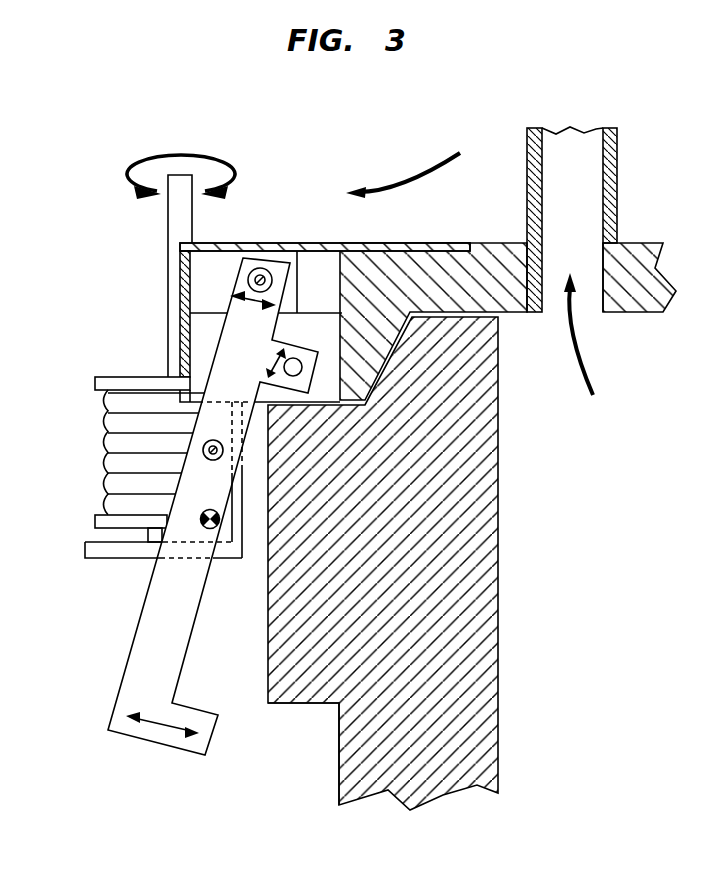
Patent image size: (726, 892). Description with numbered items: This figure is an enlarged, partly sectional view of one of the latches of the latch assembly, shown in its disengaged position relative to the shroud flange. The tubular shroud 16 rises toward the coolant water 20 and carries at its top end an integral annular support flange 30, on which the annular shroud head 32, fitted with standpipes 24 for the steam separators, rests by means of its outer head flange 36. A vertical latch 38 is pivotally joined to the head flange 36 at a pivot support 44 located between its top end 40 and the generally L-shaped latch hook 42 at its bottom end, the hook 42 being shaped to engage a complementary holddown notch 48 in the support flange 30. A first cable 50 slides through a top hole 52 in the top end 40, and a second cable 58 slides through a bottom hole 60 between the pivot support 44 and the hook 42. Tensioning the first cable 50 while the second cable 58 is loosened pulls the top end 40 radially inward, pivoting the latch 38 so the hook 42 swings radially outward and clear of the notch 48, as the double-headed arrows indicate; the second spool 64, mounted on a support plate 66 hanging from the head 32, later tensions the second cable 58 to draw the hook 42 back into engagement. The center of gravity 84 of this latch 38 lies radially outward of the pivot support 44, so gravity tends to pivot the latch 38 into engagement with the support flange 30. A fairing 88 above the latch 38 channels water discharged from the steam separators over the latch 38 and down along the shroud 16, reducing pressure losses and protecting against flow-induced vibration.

The shroud 16 is at (516, 632).
The coolant water 20 is at (400, 184).
The standpipes 24 is at (527, 165).
The support flange 30 is at (498, 403).
The shroud head 32 is at (641, 337).
The head flange 36 is at (477, 242).
The latch 38 is at (140, 624).
The top end 40 is at (238, 248).
The latch hook 42 is at (150, 742).
The pivot support 44 is at (296, 360).
The holddown notch 48 is at (302, 705).
The first cable 50 is at (269, 272).
The top hole 52 is at (263, 276).
The second cable 58 is at (104, 418).
The bottom hole 60 is at (218, 440).
The second spool 64 is at (100, 376).
The support plate 66 is at (247, 538).
The center of gravity 84 is at (202, 523).
The fairing 88 is at (338, 246).